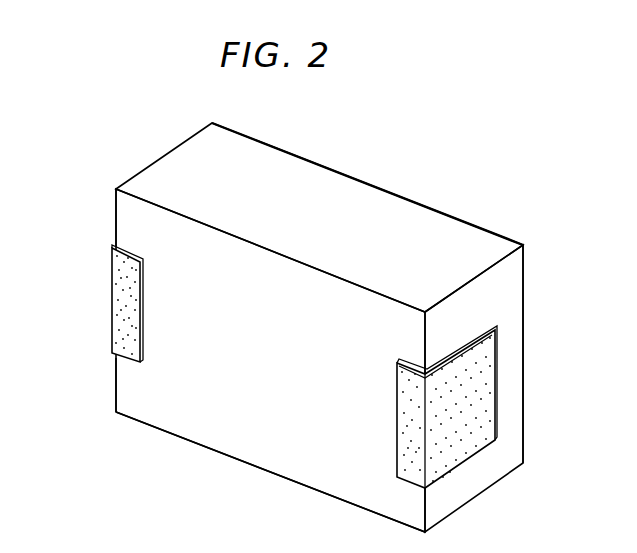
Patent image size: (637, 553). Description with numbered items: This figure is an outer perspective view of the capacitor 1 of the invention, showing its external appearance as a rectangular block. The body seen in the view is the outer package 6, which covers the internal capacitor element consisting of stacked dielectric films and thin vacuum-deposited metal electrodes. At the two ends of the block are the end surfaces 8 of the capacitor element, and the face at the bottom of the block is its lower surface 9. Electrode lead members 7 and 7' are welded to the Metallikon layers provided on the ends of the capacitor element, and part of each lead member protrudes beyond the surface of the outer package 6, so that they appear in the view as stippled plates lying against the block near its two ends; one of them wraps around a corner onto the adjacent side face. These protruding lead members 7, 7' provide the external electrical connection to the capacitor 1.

The capacitor 1 is at (400, 192).
The outer package 6 is at (192, 443).
The electrode lead member 7 is at (109, 303).
The electrode lead member 7' is at (484, 407).
The end surface 8 is at (116, 224).
The lower surface 9 is at (262, 436).